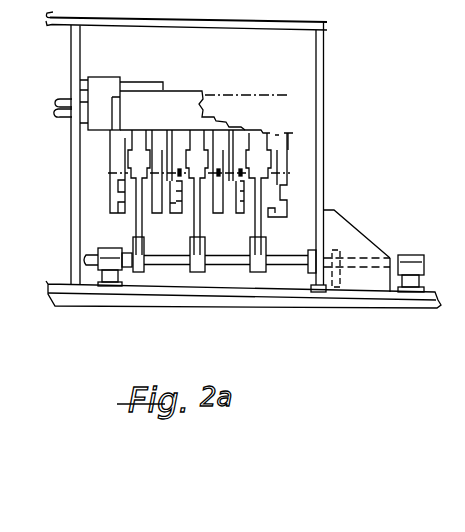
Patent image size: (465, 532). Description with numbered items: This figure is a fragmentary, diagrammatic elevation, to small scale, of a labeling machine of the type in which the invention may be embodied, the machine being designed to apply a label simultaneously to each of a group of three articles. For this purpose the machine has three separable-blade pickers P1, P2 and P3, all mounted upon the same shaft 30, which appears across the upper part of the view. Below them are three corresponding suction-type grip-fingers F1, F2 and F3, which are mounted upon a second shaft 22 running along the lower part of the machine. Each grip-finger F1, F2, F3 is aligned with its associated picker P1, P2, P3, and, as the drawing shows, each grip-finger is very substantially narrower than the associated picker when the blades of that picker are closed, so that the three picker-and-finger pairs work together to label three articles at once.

The shaft 30 is at (63, 100).
The separable-blade picker P1 is at (137, 103).
The separable-blade picker P2 is at (213, 115).
The separable-blade picker P3 is at (278, 127).
The suction-type grip-finger F1 is at (138, 225).
The suction-type grip-finger F2 is at (197, 217).
The suction-type grip-finger F3 is at (255, 225).
The shaft 22 is at (172, 260).